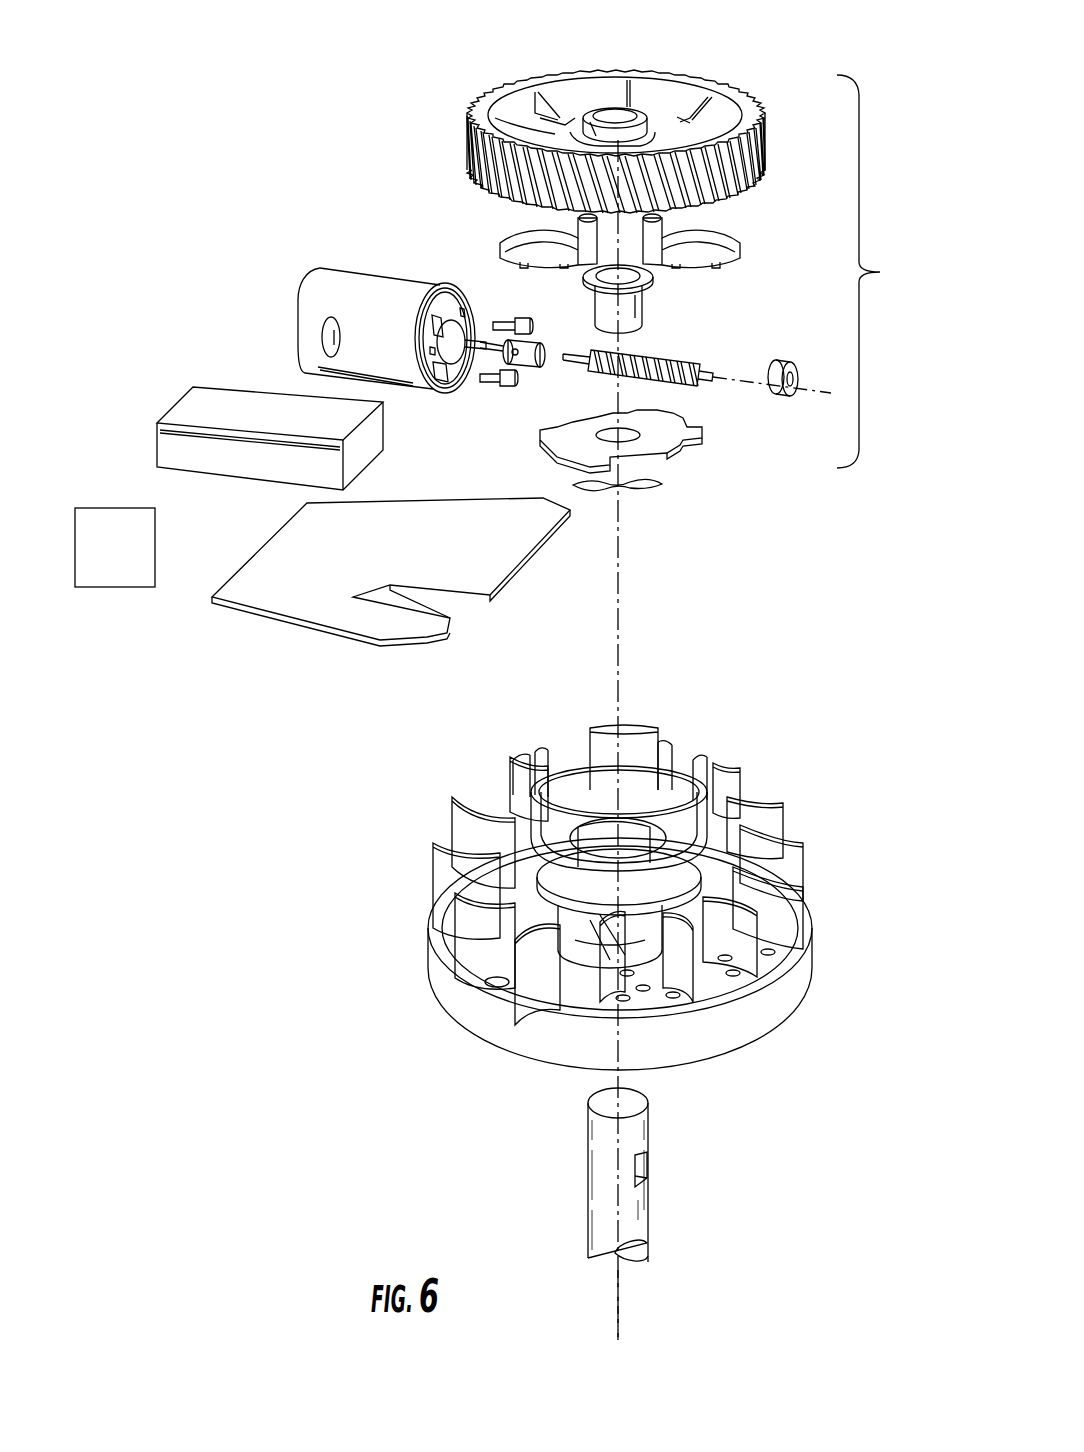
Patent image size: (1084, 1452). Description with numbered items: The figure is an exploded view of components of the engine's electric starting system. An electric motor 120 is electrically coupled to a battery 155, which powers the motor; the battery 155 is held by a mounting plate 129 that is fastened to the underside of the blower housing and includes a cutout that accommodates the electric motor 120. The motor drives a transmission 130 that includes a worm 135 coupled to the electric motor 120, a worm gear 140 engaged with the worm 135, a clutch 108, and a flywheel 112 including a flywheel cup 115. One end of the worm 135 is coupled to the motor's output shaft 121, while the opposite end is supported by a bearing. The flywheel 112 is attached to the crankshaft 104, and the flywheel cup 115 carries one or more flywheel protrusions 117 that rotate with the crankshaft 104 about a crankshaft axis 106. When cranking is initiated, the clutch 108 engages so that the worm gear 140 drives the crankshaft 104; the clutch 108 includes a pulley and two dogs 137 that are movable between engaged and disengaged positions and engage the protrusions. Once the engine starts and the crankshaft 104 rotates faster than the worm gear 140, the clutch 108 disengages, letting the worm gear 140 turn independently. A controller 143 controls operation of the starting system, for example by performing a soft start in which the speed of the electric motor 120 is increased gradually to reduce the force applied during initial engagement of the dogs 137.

The crankshaft 104 is at (648, 1212).
The crankshaft axis 106 is at (612, 1303).
The clutch 108 is at (672, 457).
The flywheel 112 is at (573, 874).
The flywheel cup 115 is at (607, 796).
The flywheel protrusions 117 is at (636, 738).
The electric motor 120 is at (369, 347).
The output shaft 121 is at (476, 352).
The mounting plate 129 is at (290, 597).
The transmission 130 is at (879, 271).
The worm 135 is at (673, 357).
The dogs 137 is at (500, 240).
The worm gear 140 is at (660, 72).
The controller 143 is at (112, 573).
The battery 155 is at (205, 395).